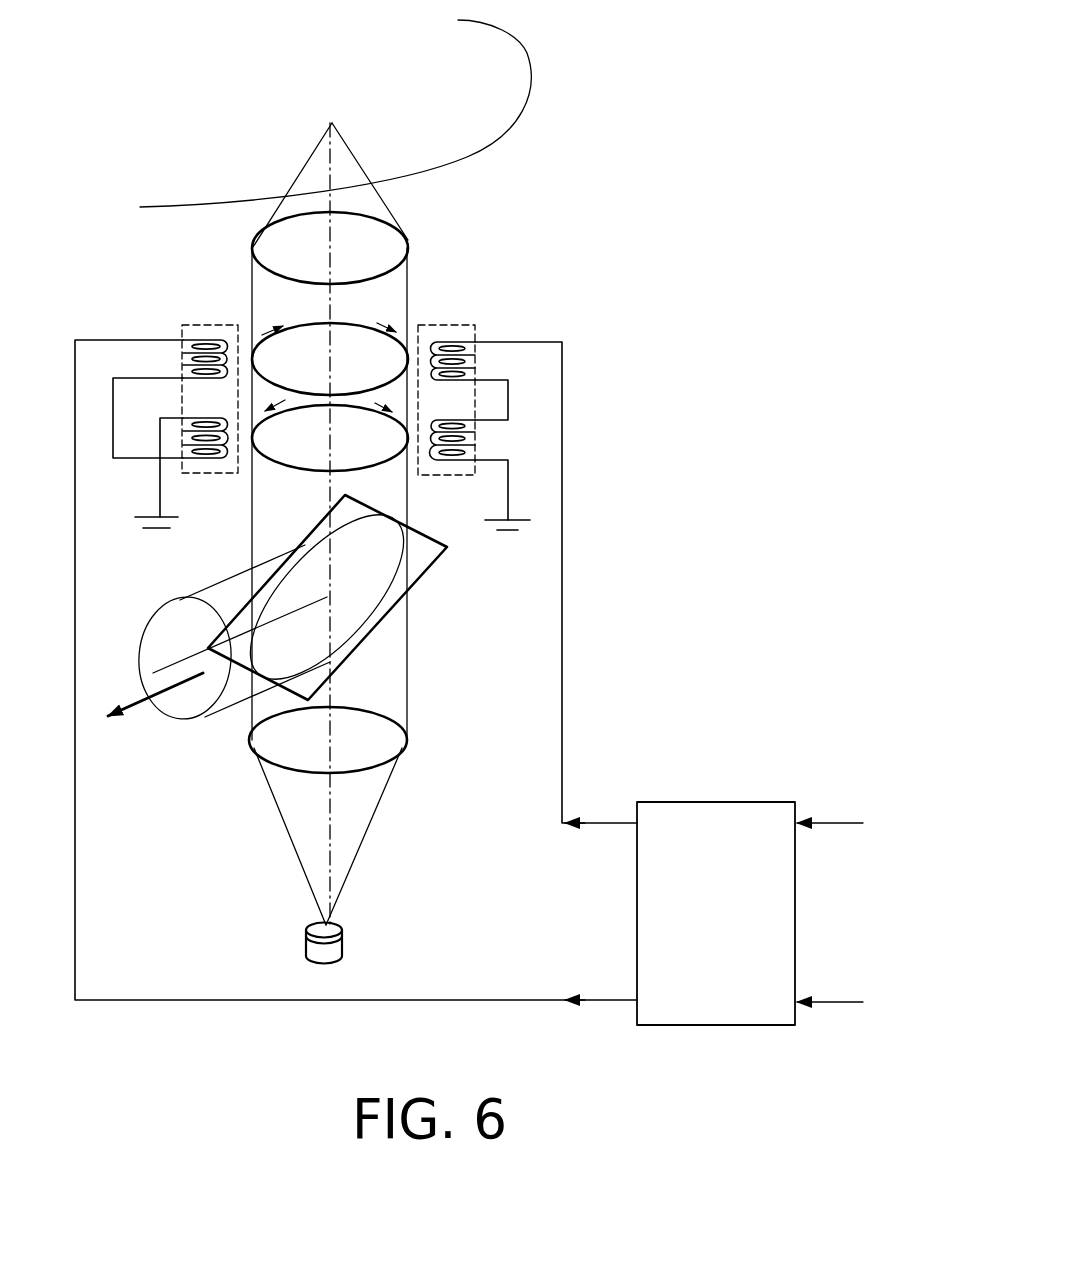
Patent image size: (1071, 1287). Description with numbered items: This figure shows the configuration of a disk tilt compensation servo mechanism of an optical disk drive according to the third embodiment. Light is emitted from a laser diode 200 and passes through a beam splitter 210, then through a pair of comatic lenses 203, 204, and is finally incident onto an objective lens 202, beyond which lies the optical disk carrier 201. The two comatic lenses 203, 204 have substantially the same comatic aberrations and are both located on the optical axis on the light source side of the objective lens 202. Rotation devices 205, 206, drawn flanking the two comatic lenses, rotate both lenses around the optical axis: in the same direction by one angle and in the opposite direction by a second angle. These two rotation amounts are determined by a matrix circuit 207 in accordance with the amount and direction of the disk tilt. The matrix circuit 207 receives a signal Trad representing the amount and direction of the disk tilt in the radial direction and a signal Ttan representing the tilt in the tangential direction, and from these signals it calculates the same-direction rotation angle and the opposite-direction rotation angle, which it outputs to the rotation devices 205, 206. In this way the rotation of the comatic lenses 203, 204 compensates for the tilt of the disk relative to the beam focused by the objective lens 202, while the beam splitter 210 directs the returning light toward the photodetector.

The laser diode 200 is at (334, 948).
The optical disk carrier 201 is at (287, 113).
The objective lens 202 is at (400, 247).
The comatic lens 203 is at (397, 350).
The comatic lens 204 is at (273, 452).
The rotation device 205 is at (475, 337).
The rotation device 206 is at (193, 325).
The matrix circuit 207 is at (695, 812).
The beam splitter 210 is at (422, 558).